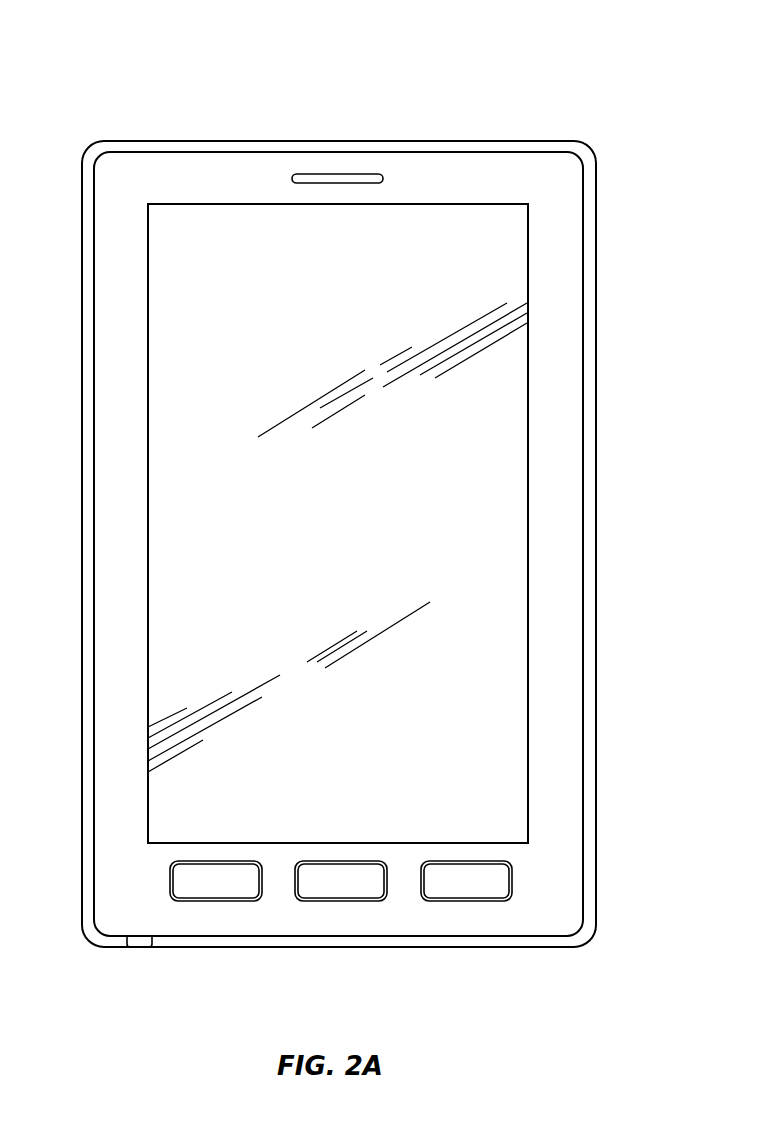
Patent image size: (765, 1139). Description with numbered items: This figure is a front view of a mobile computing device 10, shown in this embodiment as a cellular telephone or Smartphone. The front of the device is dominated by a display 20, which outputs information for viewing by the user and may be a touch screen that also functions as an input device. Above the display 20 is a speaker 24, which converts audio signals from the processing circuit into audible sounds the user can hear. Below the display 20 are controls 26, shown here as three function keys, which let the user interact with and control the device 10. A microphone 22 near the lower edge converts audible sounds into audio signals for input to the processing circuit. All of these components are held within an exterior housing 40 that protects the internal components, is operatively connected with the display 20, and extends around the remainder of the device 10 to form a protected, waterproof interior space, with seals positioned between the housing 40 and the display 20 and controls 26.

The mobile computing device 10 is at (546, 80).
The display 20 is at (503, 438).
The microphone 22 is at (138, 947).
The speaker 24 is at (313, 174).
The controls 26 is at (540, 865).
The exterior housing 40 is at (597, 570).